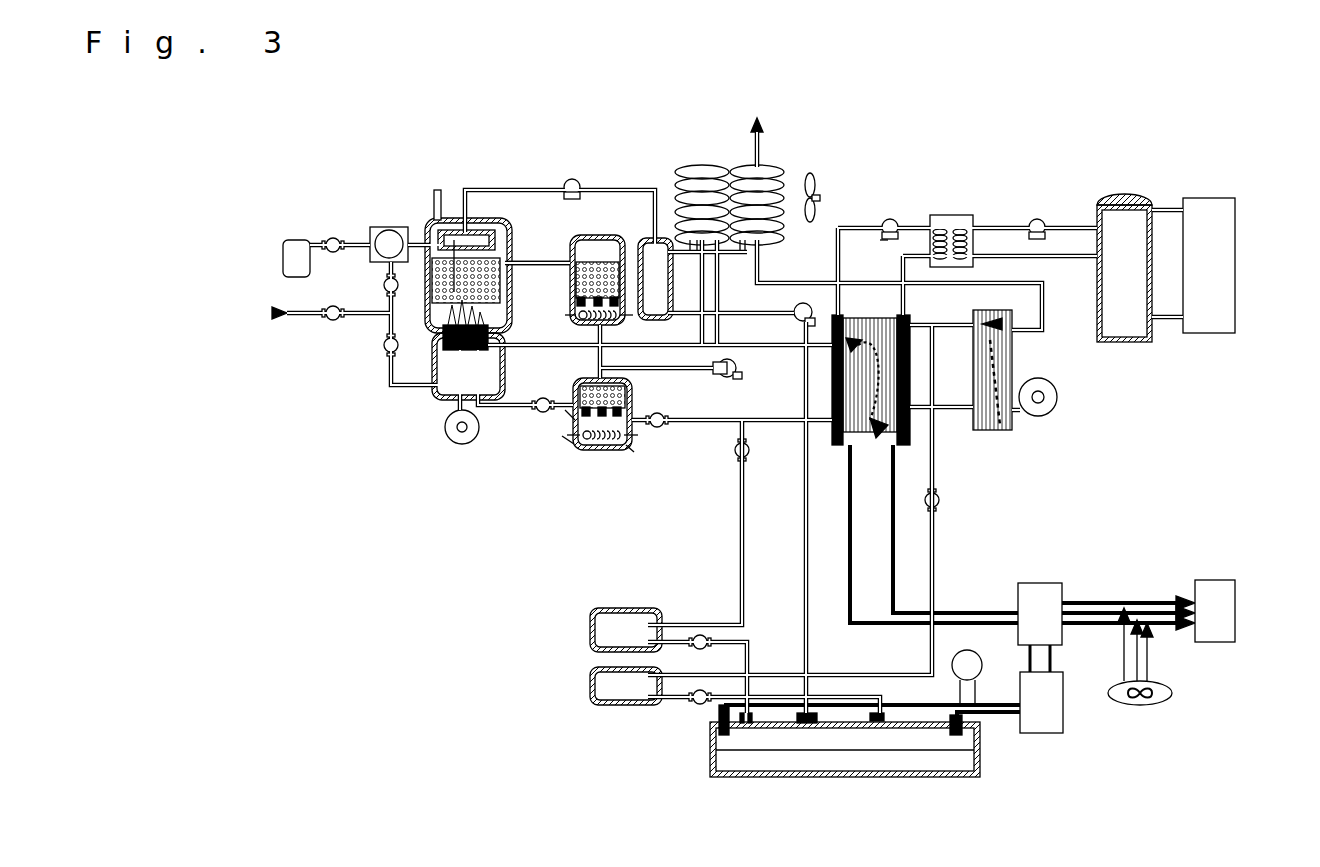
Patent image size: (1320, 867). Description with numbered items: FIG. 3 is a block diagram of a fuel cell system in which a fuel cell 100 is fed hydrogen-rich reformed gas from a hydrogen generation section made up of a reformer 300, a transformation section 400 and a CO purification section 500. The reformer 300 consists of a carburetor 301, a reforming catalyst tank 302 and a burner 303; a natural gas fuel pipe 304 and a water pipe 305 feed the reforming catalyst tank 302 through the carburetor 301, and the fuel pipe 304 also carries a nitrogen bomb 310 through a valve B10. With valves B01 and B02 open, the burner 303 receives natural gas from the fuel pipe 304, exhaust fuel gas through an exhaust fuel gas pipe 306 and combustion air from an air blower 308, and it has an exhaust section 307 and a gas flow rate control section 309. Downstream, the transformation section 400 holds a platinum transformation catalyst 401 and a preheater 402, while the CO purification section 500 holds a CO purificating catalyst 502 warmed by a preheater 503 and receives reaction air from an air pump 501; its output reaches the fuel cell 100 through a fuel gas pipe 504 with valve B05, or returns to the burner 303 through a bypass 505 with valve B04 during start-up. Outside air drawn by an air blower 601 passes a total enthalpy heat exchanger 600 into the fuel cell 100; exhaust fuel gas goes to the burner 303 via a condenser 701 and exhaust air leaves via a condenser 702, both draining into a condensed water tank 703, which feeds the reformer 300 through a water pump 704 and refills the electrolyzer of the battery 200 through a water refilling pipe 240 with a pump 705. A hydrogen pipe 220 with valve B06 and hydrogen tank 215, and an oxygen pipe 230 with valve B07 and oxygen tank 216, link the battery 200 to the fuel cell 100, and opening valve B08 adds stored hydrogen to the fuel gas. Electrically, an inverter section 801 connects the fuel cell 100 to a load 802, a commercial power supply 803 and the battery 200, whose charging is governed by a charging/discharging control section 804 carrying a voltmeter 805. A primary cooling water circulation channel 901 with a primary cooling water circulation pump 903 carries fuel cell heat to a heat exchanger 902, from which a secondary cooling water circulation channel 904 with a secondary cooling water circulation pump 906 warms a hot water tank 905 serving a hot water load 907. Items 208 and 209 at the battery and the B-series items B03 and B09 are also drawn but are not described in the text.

The fuel cell 100 is at (905, 442).
The battery 200 is at (983, 750).
The cathode electrode 208 is at (743, 727).
The anode electrode 209 is at (880, 733).
The hydrogen tank 215 is at (578, 632).
The oxygen tank 216 is at (578, 670).
The hydrogen pipe 220 is at (747, 642).
The oxygen pipe 230 is at (778, 695).
The water refilling pipe 240 is at (813, 612).
The reformer 300 is at (432, 327).
The carburetor 301 is at (458, 230).
The reforming catalyst tank 302 is at (435, 278).
The burner 303 is at (447, 325).
The fuel pipe 304 is at (300, 315).
The water pipe 305 is at (493, 188).
The exhaust fuel gas pipe 306 is at (553, 345).
The exhaust section 307 is at (437, 200).
The air blower 308 is at (443, 430).
The gas flow rate control section 309 is at (370, 227).
The nitrogen bomb 310 is at (283, 257).
The transformation section 400 is at (610, 235).
The transformation catalyst 401 is at (570, 287).
The preheater 402 is at (585, 265).
The CO purification section 500 is at (580, 450).
The air pump 501 is at (727, 378).
The CO purificating catalyst 502 is at (565, 415).
The preheater 503 is at (562, 440).
The fuel gas pipe 504 is at (632, 452).
The bypass 505 is at (522, 405).
The total enthalpy heat exchanger 600 is at (993, 310).
The air blower 601 is at (1057, 405).
The condenser 701 is at (697, 167).
The condenser 702 is at (745, 167).
The condensed water tank 703 is at (640, 238).
The water pump 704 is at (567, 186).
The pump 705 is at (800, 300).
The inverter section 801 is at (1057, 583).
The load 802 is at (1220, 578).
The commercial power supply 803 is at (1158, 705).
The charging/discharging control section 804 is at (1065, 723).
The voltmeter 805 is at (977, 667).
The primary cooling water circulation channel 901 is at (920, 226).
The heat exchanger 902 is at (975, 215).
The primary cooling water circulation pump 903 is at (884, 240).
The secondary cooling water circulation channel 904 is at (1080, 225).
The hot water tank 905 is at (1140, 200).
The secondary cooling water circulation pump 906 is at (1040, 222).
The hot water load 907 is at (1222, 333).
The valve B01 is at (326, 320).
The valve B02 is at (374, 348).
The valve B03 is at (374, 283).
The valve B04 is at (542, 398).
The valve B05 is at (659, 409).
The valve B06 is at (698, 649).
The valve B07 is at (693, 703).
The valve B08 is at (722, 458).
The valve B09 is at (951, 509).
The valve B10 is at (325, 236).